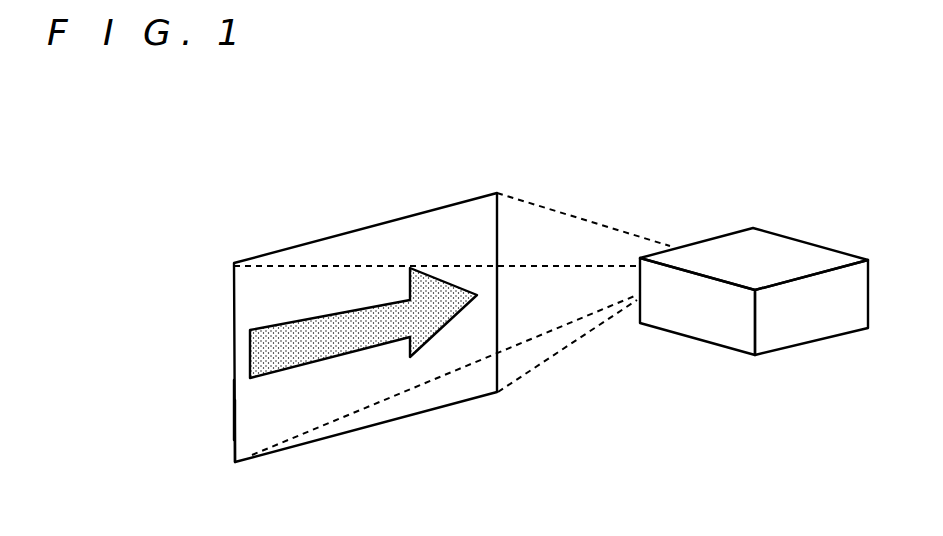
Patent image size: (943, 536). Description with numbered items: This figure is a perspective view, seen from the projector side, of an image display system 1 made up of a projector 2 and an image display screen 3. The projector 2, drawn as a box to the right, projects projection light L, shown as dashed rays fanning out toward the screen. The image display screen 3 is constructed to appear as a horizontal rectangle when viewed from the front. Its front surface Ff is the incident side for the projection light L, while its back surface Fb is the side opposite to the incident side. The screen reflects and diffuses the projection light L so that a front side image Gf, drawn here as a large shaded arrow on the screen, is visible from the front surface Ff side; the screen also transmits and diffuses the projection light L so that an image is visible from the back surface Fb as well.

The image display system 1 is at (645, 161).
The projector 2 is at (770, 232).
The image display screen 3 is at (450, 202).
The projection light L is at (550, 302).
The front side image Gf is at (358, 363).
The front surface Ff is at (258, 428).
The back surface Fb is at (268, 410).